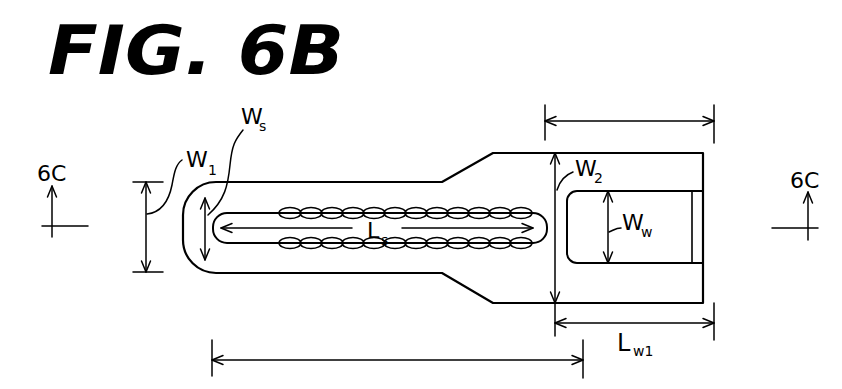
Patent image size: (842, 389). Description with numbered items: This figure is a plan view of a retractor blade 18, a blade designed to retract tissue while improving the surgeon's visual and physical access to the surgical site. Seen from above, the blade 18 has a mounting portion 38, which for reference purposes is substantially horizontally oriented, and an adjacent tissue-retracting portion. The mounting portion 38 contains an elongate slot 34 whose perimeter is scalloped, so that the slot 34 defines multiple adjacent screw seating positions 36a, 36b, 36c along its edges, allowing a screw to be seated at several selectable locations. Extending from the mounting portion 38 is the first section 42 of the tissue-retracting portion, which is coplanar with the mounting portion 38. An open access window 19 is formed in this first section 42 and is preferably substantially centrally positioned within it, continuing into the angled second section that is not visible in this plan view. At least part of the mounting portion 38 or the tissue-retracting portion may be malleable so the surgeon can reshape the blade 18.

The retractor blade 18 is at (443, 130).
The access window 19 is at (668, 243).
The elongate slot 34 is at (305, 238).
The screw seating position 36a is at (291, 208).
The screw seating position 36b is at (314, 208).
The screw seating position 36c is at (339, 208).
The mounting portion 38 is at (403, 361).
The first section 42 is at (647, 121).